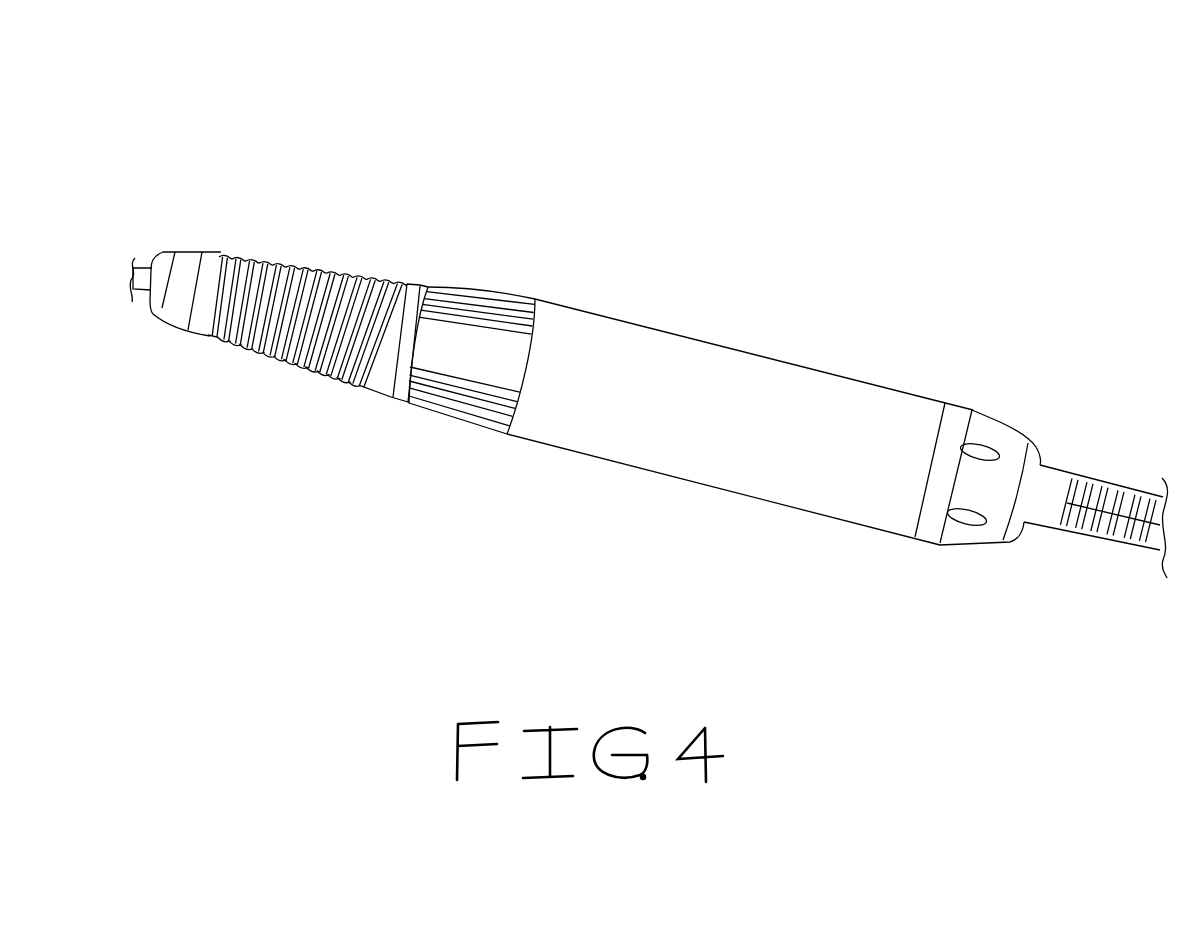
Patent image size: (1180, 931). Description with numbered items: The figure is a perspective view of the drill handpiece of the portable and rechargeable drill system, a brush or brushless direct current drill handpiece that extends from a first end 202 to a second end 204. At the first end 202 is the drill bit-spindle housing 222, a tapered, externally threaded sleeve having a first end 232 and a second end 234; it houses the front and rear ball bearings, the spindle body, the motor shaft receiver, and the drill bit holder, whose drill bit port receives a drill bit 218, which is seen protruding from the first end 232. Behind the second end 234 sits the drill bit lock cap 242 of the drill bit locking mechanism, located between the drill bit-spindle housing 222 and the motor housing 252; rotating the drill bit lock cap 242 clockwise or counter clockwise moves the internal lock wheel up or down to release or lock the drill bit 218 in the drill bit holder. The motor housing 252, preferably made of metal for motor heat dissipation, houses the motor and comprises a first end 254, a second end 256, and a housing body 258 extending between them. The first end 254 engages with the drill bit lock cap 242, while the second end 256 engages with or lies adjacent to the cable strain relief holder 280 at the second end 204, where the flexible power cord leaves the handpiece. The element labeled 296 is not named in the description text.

The first end 202 is at (202, 240).
The second end 204 is at (947, 556).
The drill bit 218 is at (134, 305).
The drill bit-spindle housing 222 is at (312, 262).
The first end 232 is at (170, 257).
The second end 234 is at (400, 283).
The drill bit lock cap 242 is at (462, 284).
The motor housing 252 is at (730, 367).
The first end 254 is at (518, 440).
The second end 256 is at (893, 533).
The housing body 258 is at (707, 483).
The cable strain relief holder 280 is at (1007, 417).
The connector 296 is at (1056, 525).